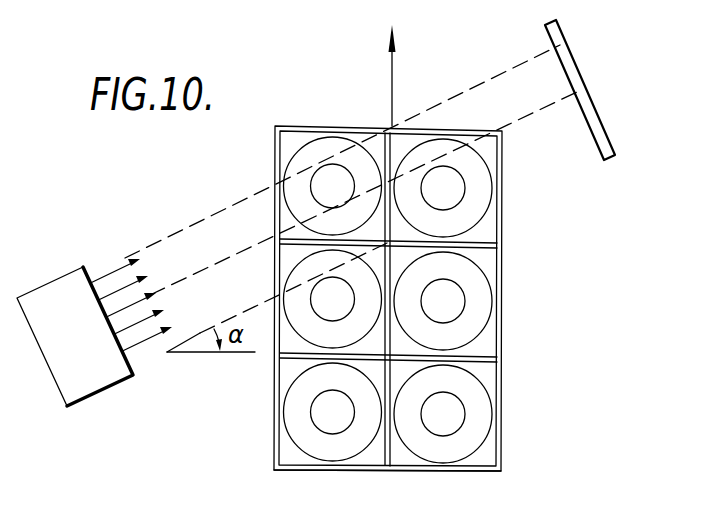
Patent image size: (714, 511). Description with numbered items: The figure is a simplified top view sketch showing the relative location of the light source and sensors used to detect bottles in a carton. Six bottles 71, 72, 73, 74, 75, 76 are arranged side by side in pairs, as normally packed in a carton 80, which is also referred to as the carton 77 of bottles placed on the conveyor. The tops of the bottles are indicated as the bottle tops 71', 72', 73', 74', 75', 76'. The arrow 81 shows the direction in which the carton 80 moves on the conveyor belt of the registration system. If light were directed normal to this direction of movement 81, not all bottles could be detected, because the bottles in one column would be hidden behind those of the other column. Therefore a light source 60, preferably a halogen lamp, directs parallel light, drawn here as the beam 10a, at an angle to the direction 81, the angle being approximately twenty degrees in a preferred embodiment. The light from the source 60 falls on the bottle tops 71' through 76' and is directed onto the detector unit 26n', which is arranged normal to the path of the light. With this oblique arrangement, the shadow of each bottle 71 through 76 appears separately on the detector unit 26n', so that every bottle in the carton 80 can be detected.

The light beam 10a is at (513, 43).
The mirror 26n' is at (605, 90).
The light source 60 is at (118, 408).
The bottle 71 is at (297, 181).
The bottle top 71' is at (280, 181).
The bottle 72 is at (482, 201).
The bottle top 72' is at (492, 166).
The bottle 73 is at (297, 316).
The bottle top 73' is at (280, 345).
The bottle 74 is at (485, 301).
The bottle top 74' is at (500, 323).
The bottle 75 is at (296, 412).
The bottle top 75' is at (284, 430).
The bottle 76 is at (481, 414).
The bottle top 76' is at (497, 417).
The carton 77 is at (501, 270).
The carton 80 is at (473, 471).
The direction of movement 81 is at (391, 80).